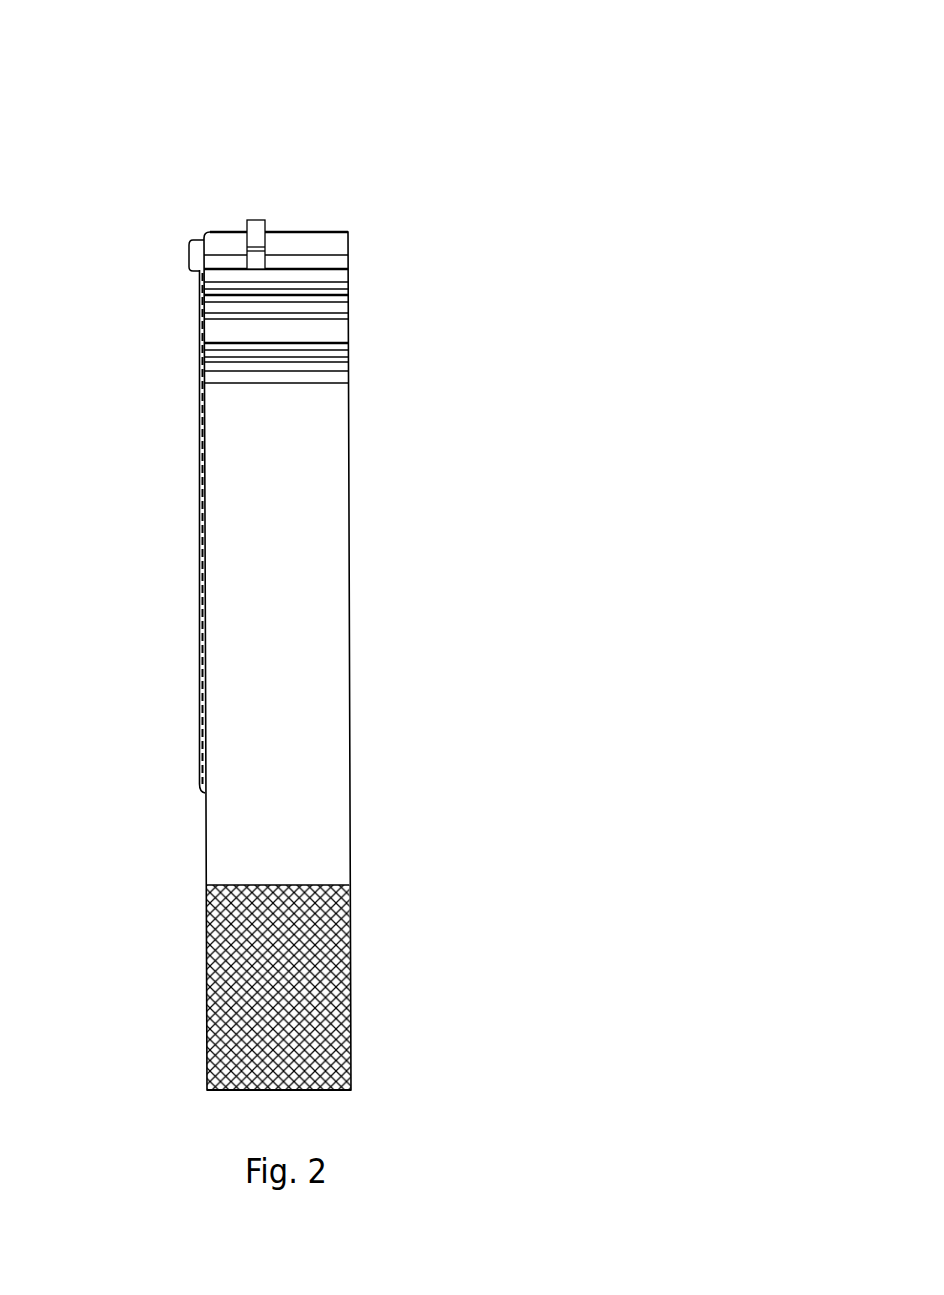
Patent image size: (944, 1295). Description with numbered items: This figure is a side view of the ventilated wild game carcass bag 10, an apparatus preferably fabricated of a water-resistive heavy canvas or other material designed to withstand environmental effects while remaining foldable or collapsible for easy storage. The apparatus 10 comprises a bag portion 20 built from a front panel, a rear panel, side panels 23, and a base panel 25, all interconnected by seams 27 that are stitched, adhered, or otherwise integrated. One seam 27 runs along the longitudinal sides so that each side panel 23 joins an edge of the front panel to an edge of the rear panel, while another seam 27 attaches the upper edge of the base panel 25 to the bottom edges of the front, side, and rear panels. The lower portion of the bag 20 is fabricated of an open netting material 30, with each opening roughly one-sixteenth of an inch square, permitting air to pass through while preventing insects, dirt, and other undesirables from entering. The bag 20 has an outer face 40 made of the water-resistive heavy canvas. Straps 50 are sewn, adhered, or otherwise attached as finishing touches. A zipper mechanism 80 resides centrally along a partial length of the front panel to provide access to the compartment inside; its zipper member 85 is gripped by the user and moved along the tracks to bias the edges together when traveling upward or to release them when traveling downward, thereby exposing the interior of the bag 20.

The ventilated wild game carcass bag 10 is at (506, 148).
The bag portion 20 is at (366, 819).
The side panels 23 is at (300, 437).
The base panel 25 is at (227, 975).
The seams 27 is at (349, 527).
The open netting material 30 is at (340, 1067).
The outer face 40 is at (324, 600).
The straps 50 is at (257, 243).
The zipper mechanism 80 is at (200, 573).
The zipper member 85 is at (193, 243).